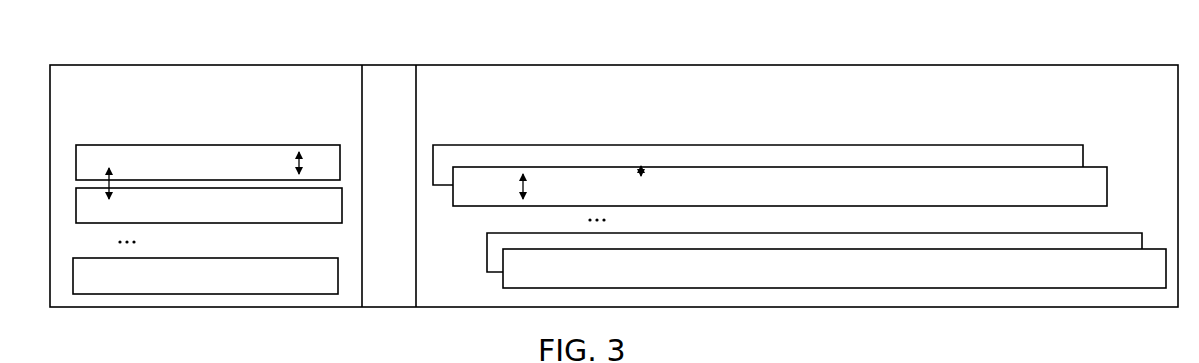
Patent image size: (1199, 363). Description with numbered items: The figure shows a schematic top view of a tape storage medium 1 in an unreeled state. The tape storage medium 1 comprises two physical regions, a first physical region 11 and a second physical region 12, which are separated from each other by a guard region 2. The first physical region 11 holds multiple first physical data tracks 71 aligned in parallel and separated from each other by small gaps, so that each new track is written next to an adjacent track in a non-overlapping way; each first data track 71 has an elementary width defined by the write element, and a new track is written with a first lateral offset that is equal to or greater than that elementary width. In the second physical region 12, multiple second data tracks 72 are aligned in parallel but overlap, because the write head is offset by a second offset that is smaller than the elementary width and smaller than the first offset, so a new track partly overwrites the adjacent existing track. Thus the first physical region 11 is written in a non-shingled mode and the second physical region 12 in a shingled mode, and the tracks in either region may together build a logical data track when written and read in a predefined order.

The tape storage medium 1 is at (655, 63).
The guard region 2 is at (387, 100).
The first physical region 11 is at (208, 166).
The second physical region 12 is at (770, 156).
The first physical data tracks 71 is at (180, 275).
The second data tracks 72 is at (757, 273).